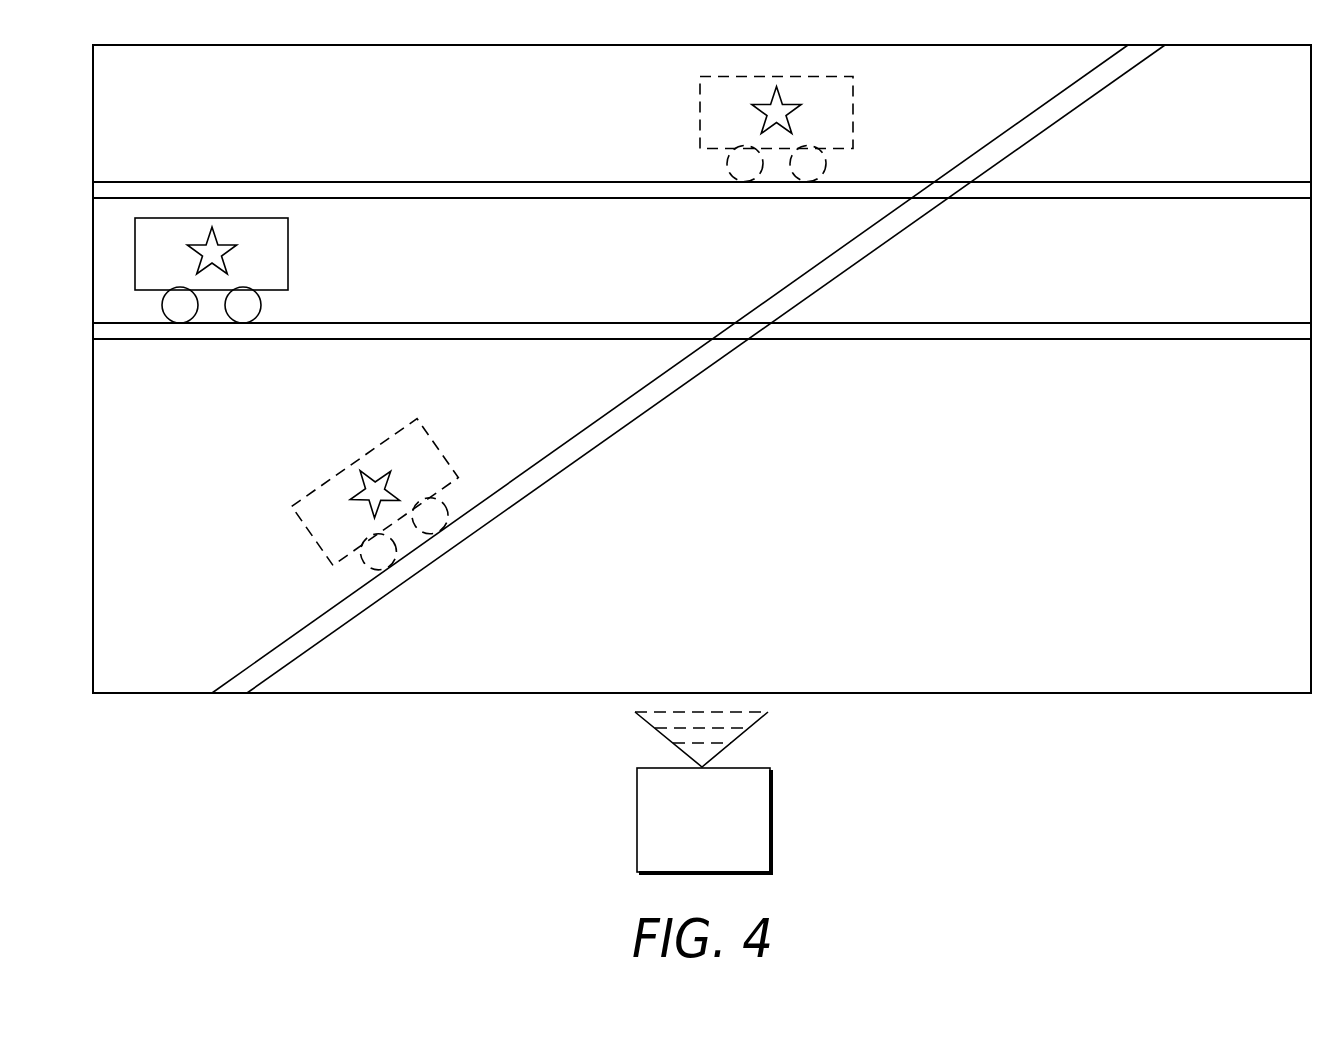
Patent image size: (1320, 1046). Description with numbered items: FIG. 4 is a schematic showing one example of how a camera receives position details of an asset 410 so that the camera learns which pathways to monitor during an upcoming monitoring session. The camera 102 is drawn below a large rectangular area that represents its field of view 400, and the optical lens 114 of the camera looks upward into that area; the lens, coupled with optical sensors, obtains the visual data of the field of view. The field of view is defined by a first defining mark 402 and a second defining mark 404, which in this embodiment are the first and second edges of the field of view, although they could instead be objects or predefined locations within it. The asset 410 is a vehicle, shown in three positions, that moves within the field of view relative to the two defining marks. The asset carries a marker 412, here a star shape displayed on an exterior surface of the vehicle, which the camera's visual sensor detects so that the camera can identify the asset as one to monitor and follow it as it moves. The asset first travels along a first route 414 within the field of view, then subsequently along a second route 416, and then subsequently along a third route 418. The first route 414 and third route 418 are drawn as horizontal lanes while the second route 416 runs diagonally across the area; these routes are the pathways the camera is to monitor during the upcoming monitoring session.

The field of view 400 is at (1095, 706).
The first defining mark 402 is at (110, 528).
The second defining mark 404 is at (1293, 515).
The asset 410 is at (305, 235).
The marker 412 is at (246, 259).
The first route 414 is at (845, 352).
The second route 416 is at (595, 473).
The third route 418 is at (1072, 206).
The camera 102 is at (792, 818).
The optical lens 114 is at (628, 740).